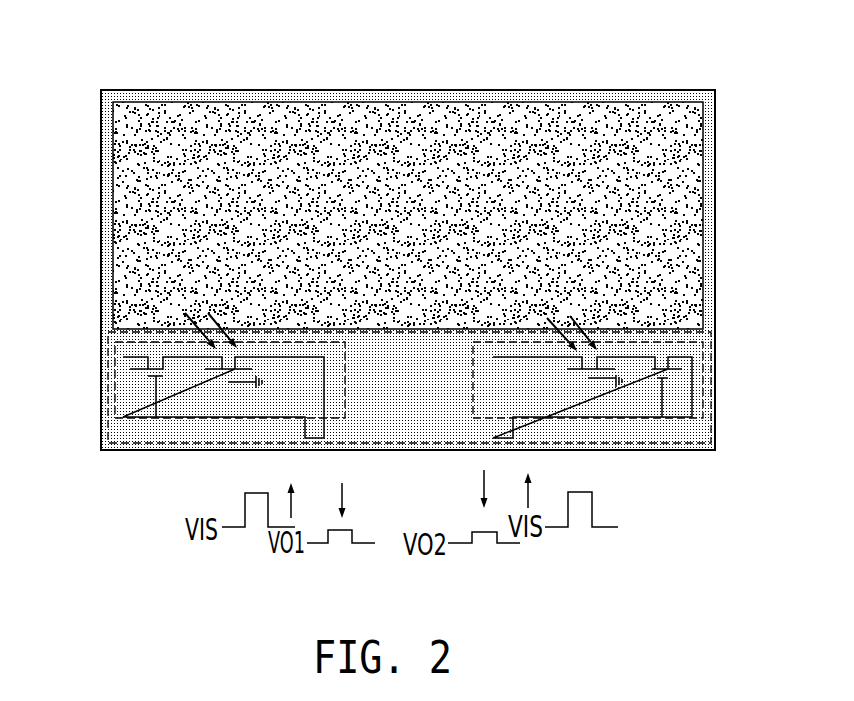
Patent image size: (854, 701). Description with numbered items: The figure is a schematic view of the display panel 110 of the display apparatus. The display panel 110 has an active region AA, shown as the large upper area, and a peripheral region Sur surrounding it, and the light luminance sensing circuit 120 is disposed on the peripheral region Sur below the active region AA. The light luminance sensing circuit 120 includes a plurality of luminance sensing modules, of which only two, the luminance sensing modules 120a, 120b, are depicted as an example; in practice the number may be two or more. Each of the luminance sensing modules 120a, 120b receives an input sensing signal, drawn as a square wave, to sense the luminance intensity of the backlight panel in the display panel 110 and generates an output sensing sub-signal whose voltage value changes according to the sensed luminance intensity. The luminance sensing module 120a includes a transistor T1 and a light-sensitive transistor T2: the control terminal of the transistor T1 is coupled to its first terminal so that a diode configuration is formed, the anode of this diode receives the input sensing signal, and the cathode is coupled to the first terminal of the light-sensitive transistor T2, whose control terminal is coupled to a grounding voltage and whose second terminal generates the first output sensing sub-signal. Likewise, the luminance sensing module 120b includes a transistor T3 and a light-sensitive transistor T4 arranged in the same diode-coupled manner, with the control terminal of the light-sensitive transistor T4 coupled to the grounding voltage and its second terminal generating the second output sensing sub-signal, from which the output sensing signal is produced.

The display panel 110 is at (715, 250).
The active region AA is at (419, 117).
The peripheral region Sur is at (111, 232).
The light luminance sensing circuit 120 is at (712, 373).
The luminance sensing module 120a is at (181, 375).
The luminance sensing module 120b is at (636, 377).
The transistor T1 is at (173, 386).
The light-sensitive transistor T2 is at (259, 374).
The transistor T3 is at (644, 387).
The light-sensitive transistor T4 is at (582, 374).